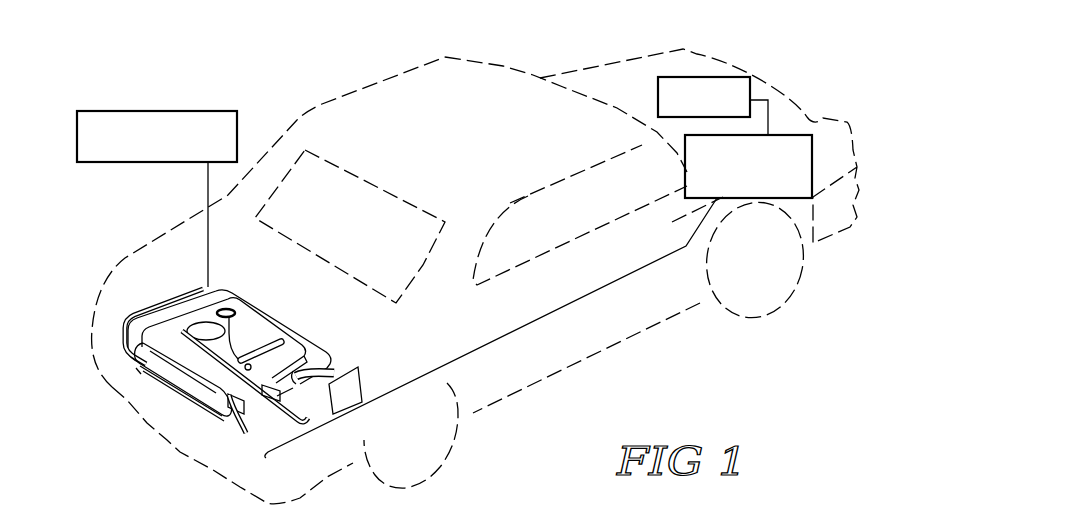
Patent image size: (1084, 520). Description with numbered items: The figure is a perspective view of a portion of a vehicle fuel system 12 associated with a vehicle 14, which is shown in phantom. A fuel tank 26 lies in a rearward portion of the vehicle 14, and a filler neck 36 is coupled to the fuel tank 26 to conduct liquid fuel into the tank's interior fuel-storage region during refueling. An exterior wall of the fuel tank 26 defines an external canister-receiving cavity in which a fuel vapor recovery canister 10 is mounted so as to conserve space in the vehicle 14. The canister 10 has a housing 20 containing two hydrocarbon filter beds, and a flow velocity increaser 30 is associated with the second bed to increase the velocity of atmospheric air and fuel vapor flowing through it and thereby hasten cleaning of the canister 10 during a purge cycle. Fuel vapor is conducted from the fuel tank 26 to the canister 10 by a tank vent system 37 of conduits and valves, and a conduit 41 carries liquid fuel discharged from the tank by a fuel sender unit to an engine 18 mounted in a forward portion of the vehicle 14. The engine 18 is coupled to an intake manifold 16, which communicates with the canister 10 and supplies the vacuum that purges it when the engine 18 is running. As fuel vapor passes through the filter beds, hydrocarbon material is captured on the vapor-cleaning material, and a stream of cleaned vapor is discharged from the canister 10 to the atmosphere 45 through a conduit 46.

The fuel vapor recovery canister 10 is at (170, 393).
The vehicle fuel system 12 is at (289, 309).
The vehicle 14 is at (361, 95).
The intake manifold 16 is at (682, 226).
The engine 18 is at (658, 92).
The housing 20 is at (190, 403).
The fuel tank 26 is at (321, 335).
The flow velocity increaser 30 is at (136, 366).
The filler neck 36 is at (330, 370).
The tank vent system 37 is at (238, 327).
The conduit 41 is at (277, 413).
The atmosphere 45 is at (138, 113).
The conduit 46 is at (195, 290).